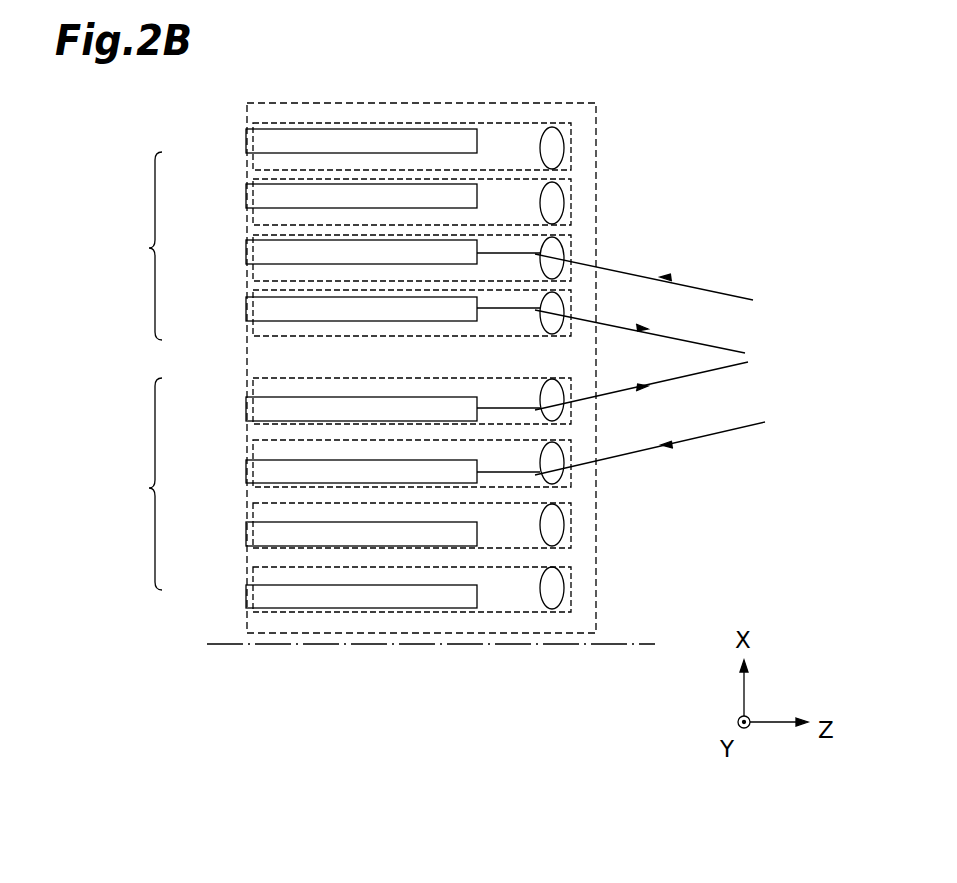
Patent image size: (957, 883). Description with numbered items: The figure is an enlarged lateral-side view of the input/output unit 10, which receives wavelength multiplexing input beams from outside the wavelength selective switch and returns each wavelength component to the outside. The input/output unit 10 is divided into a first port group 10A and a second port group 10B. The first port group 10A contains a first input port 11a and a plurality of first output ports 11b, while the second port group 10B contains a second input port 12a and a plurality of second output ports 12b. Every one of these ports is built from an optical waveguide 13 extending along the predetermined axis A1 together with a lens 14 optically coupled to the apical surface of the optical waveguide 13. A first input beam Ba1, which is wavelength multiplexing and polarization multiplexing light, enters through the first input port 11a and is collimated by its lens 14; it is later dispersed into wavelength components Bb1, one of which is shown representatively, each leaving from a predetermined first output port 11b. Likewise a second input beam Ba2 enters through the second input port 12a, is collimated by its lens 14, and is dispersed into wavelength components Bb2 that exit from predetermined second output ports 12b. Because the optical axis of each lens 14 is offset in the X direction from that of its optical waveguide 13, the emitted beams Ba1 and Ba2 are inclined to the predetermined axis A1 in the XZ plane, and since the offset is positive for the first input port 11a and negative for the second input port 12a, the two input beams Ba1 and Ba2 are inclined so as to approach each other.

The input/output unit 10 is at (447, 98).
The first port group 10A is at (132, 484).
The second port group 10B is at (131, 246).
The first input port 11a is at (250, 383).
The first output port 11b is at (250, 447).
The second input port 12a is at (248, 327).
The second output port 12b is at (250, 158).
The optical waveguide 13 is at (325, 307).
The lens 14 is at (552, 300).
The predetermined axis A1 is at (585, 646).
The first input beam Ba1 is at (693, 373).
The second input beam Ba2 is at (702, 342).
The wavelength component Bb1 is at (725, 432).
The wavelength component Bb2 is at (710, 283).